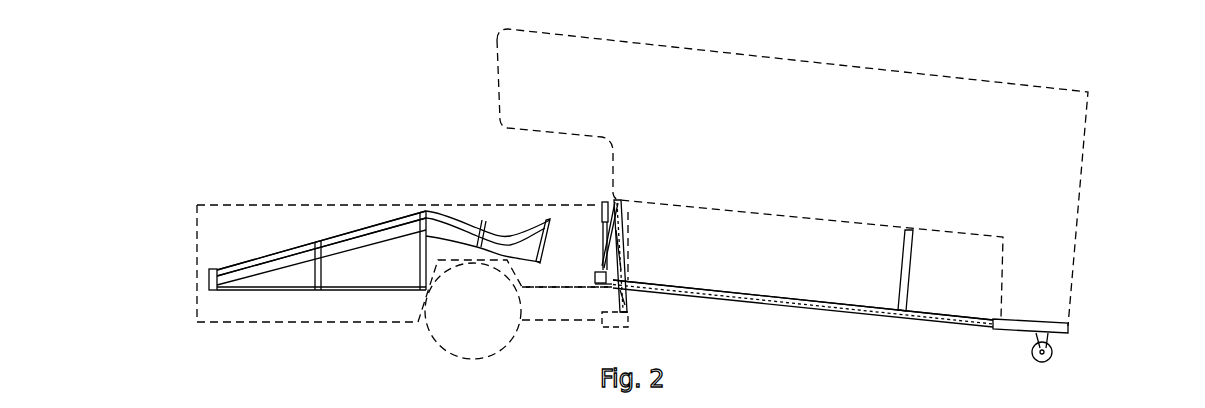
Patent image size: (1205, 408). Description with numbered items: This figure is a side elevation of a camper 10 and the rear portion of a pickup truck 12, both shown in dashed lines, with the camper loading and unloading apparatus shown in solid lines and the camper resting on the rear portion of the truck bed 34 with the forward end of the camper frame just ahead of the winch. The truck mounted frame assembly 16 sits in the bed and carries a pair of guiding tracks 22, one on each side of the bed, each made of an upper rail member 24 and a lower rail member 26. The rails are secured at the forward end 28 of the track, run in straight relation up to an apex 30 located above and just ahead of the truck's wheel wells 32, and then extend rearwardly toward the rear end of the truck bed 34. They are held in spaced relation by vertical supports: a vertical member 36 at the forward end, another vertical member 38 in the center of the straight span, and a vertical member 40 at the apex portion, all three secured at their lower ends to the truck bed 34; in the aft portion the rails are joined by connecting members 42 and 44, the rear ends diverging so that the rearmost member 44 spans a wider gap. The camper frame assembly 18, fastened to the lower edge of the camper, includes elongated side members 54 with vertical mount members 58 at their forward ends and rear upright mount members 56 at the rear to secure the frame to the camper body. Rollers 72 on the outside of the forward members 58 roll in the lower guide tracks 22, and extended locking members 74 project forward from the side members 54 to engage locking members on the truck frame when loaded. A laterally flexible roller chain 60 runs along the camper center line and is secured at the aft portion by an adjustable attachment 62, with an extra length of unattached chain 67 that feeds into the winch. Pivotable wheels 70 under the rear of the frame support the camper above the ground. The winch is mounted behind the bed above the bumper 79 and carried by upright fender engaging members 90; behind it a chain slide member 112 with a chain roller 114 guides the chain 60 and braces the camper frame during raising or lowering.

The camper 10 is at (1094, 97).
The pickup truck 12 is at (195, 207).
The truck mounted frame assembly 16 is at (330, 231).
The camper frame assembly 18 is at (1076, 325).
The guiding tracks 22 is at (357, 231).
The upper rail member 24 is at (382, 228).
The lower rail member 26 is at (458, 236).
The forward end of the guide track 28 is at (265, 289).
The apex 30 is at (434, 212).
The wheel wells 32 is at (420, 322).
The truck bed 34 is at (556, 291).
The vertical member 36 is at (209, 279).
The vertical member 38 is at (317, 258).
The vertical member 40 is at (421, 252).
The connecting member 42 is at (484, 225).
The connecting member 44 is at (543, 223).
The elongated members 54 is at (797, 302).
The rear upright mount members 56 is at (903, 275).
The vertical mount members 58 is at (620, 210).
The chain 60 is at (730, 298).
The aft chain attachment 62 is at (1052, 335).
The unattached chain 67 is at (603, 240).
The pivotable type wheels 70 is at (1033, 353).
The rollers 72 is at (613, 257).
The extended locking members 74 is at (595, 278).
The bumper 79 is at (600, 328).
The upright fender engaging members 90 is at (602, 202).
The chain slide member 112 is at (627, 313).
The chain roller 114 is at (623, 297).